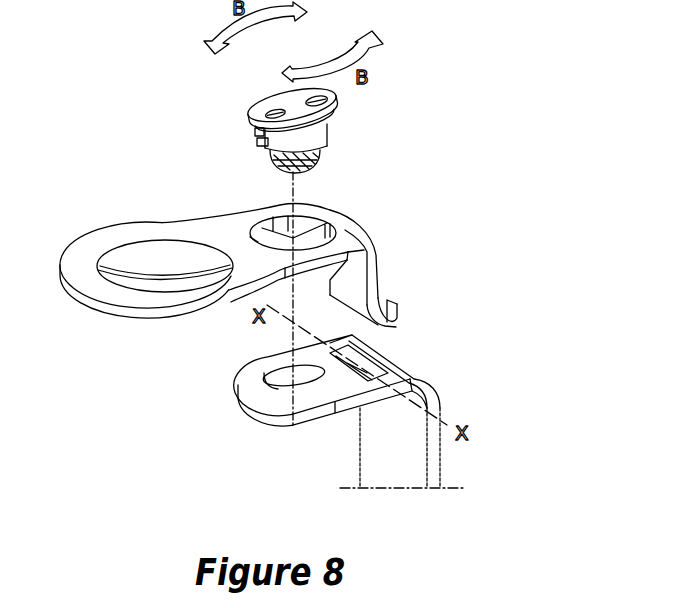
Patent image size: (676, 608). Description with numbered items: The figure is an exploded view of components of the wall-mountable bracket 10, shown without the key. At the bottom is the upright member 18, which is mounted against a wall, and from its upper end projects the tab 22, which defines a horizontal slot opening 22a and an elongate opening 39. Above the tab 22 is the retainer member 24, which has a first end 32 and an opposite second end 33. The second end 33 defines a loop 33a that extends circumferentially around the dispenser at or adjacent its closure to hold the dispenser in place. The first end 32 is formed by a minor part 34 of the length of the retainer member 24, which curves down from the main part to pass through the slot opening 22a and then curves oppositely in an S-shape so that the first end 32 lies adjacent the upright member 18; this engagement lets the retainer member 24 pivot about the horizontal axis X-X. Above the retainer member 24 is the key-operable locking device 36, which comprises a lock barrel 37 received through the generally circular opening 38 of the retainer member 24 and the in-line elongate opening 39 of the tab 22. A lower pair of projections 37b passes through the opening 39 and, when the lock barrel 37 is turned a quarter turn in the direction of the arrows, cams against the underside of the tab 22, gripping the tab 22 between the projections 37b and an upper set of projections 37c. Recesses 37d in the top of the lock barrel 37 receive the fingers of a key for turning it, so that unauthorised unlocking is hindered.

The wall-mountable bracket 10 is at (480, 210).
The upright member 18 is at (432, 455).
The tab 22 is at (313, 362).
The slot opening 22a is at (390, 345).
The retainer member 24 is at (210, 215).
The first end 32 is at (388, 323).
The second end 33 is at (87, 317).
The loop 33a is at (128, 250).
The minor part 34 is at (378, 272).
The key-operable locking device 36 is at (368, 98).
The lock barrel 37 is at (331, 148).
The lower projections 37b is at (315, 168).
The upper projections 37c is at (264, 134).
The recesses 37d is at (305, 99).
The opening 38 is at (343, 209).
The opening 39 is at (288, 382).